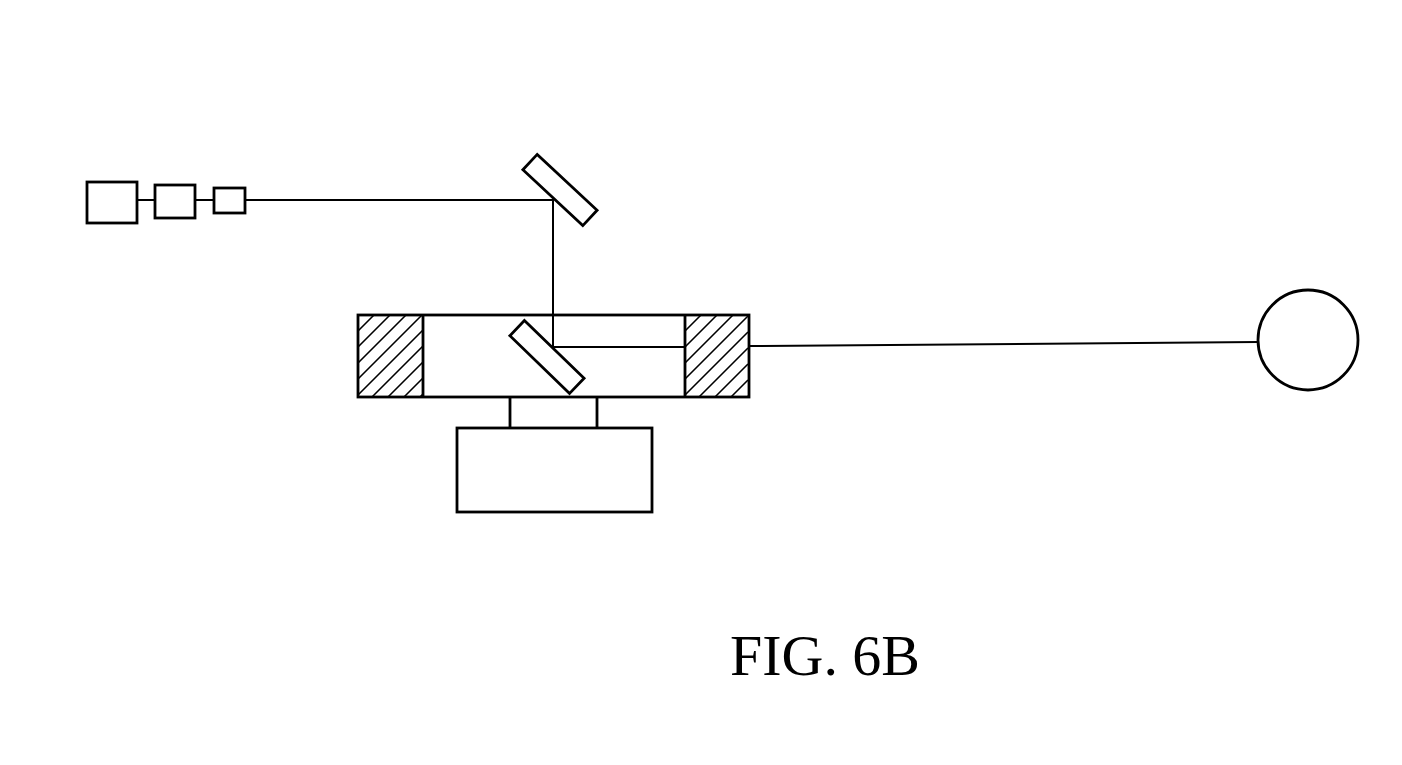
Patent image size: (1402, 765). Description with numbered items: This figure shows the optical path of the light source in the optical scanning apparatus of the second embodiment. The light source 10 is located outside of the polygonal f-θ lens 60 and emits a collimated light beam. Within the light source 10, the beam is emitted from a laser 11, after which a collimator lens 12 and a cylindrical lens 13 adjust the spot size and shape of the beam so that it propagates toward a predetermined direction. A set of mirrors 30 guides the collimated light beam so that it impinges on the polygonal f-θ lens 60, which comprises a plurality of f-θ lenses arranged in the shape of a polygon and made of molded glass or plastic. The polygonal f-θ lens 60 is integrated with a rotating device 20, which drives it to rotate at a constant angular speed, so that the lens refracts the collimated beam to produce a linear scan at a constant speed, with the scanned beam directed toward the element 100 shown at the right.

The light source 10 is at (87, 58).
The laser 11 is at (111, 193).
The collimator lens 12 is at (175, 193).
The cylindrical lens 13 is at (234, 193).
The rotating device 20 is at (633, 470).
The set of mirrors 30 is at (577, 365).
The polygonal f-θ lens 60 is at (722, 316).
The object 100 is at (1310, 290).